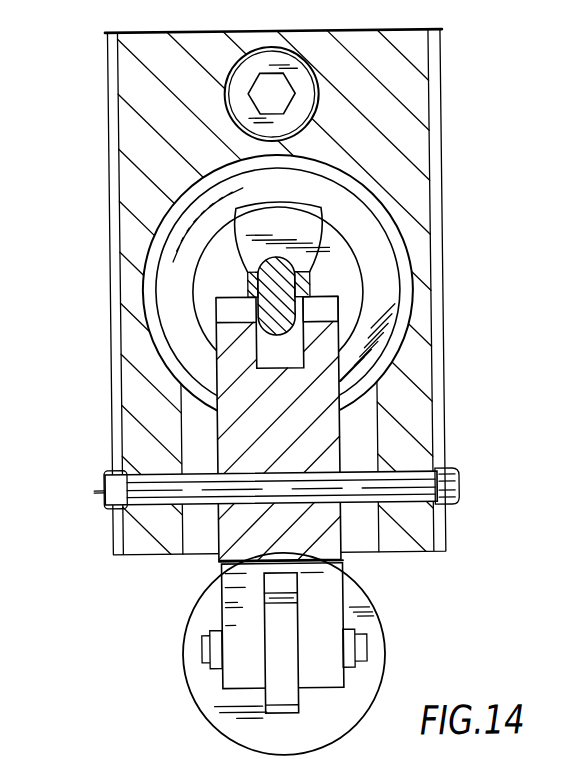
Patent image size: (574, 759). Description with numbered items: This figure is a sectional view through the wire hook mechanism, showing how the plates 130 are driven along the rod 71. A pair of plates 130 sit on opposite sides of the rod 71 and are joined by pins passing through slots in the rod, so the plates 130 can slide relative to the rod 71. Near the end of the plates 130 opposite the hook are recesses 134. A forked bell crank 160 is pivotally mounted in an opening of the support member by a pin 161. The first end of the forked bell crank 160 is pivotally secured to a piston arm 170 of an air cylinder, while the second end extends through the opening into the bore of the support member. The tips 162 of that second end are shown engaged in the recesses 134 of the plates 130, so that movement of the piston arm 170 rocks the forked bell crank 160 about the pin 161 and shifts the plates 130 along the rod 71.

The rod 71 is at (256, 348).
The plates 130 is at (318, 222).
The recesses 134 is at (256, 297).
The forked bell crank 160 is at (237, 708).
The pin 161 is at (103, 488).
The tips 162 is at (330, 310).
The piston arm 170 is at (180, 683).